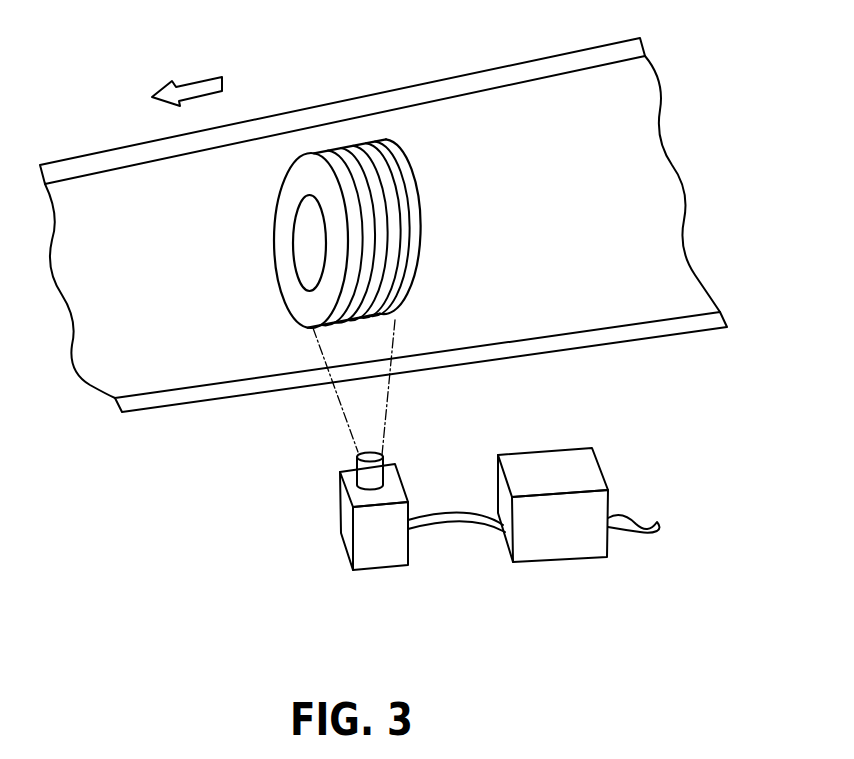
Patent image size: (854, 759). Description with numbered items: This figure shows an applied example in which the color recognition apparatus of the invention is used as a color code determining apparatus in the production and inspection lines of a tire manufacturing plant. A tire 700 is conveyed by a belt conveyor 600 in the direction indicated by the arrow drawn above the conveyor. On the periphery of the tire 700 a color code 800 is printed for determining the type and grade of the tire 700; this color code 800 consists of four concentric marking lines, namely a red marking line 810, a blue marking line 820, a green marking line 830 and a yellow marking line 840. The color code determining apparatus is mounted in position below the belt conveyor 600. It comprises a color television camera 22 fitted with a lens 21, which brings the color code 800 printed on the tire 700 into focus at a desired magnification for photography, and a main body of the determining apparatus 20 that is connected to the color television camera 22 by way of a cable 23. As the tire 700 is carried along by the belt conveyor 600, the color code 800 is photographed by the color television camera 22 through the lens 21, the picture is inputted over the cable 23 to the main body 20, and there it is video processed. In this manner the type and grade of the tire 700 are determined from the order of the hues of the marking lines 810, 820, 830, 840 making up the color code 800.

The belt conveyor 600 is at (462, 73).
The tire 700 is at (343, 151).
The color code 800 is at (402, 237).
The marking line (red) 810 is at (345, 178).
The marking line (blue) 820 is at (372, 267).
The marking line (green) 830 is at (393, 245).
The marking line (yellow) 840 is at (402, 277).
The main body of the determining apparatus 20 is at (603, 472).
The lens 21 is at (355, 460).
The color television camera 22 is at (377, 568).
The cable 23 is at (450, 525).